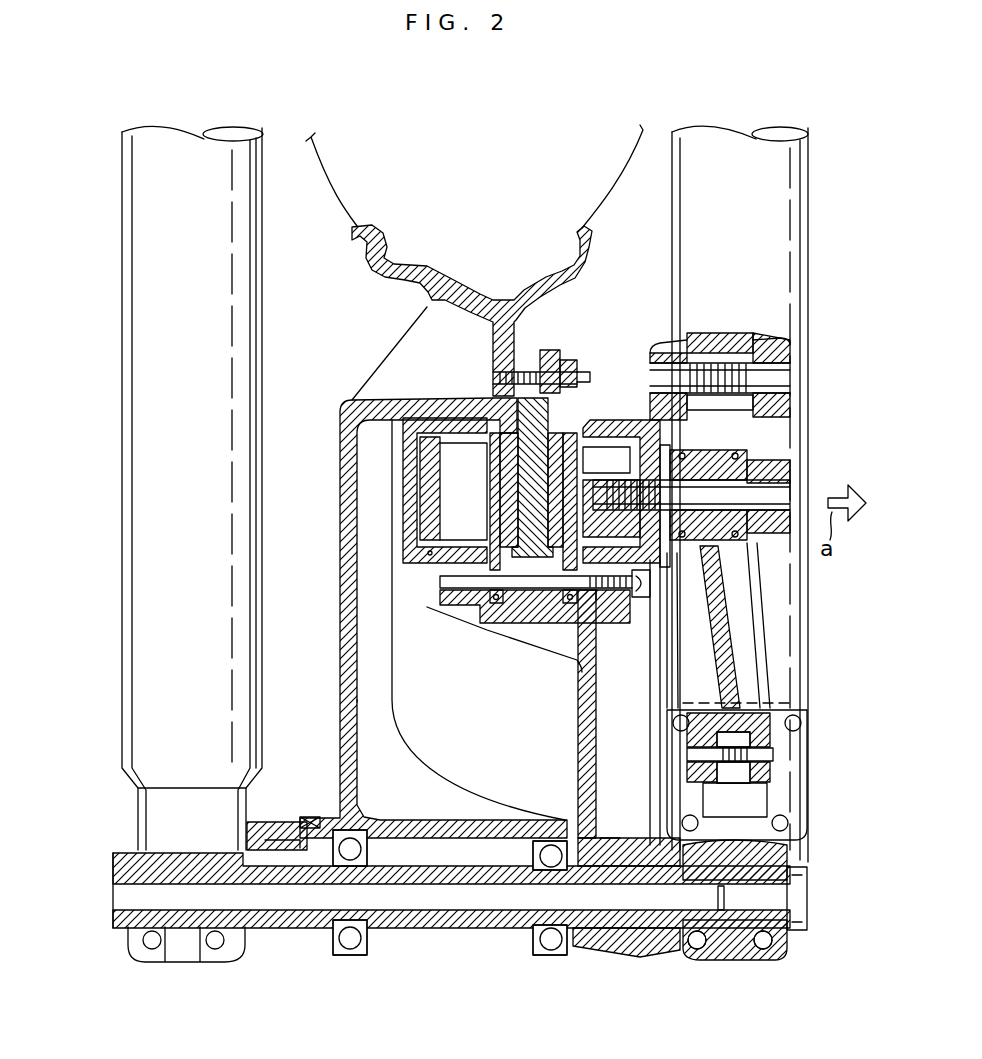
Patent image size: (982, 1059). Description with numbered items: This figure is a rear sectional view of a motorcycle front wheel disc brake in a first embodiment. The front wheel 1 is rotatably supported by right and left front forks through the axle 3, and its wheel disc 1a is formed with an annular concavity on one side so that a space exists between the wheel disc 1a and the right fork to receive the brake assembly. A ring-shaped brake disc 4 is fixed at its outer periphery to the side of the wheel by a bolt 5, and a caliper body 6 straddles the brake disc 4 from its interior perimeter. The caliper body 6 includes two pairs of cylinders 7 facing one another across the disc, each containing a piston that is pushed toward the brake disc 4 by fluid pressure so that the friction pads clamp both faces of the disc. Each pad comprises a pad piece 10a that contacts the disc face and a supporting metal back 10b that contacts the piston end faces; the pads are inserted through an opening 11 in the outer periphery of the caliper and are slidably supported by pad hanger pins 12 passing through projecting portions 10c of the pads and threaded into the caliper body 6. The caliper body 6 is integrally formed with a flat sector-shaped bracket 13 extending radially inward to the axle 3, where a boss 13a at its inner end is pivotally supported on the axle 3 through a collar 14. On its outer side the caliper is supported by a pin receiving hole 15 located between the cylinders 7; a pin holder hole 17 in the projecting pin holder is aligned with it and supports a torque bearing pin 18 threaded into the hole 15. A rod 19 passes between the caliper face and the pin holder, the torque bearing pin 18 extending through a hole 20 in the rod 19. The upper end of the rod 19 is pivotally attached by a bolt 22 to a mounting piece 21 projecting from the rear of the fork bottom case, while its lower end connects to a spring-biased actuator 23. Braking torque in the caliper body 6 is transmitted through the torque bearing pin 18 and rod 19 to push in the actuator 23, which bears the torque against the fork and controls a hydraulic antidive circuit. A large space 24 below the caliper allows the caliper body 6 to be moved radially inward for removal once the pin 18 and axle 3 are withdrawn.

The front wheel 1 is at (400, 358).
The wheel disc 1a is at (343, 433).
The axle 3 is at (452, 905).
The brake disc 4 is at (540, 366).
The bolt 5 is at (552, 352).
The caliper body 6 is at (403, 482).
The cylinder 7 is at (432, 556).
The pad piece 10a is at (505, 558).
The supporting metal back 10b is at (430, 548).
The projecting portion 10c is at (442, 548).
The opening 11 is at (553, 428).
The pad hanger pin 12 is at (545, 582).
The bracket 13 is at (582, 714).
The boss 13a is at (618, 838).
The collar 14 is at (660, 940).
The pin receiving hole 15 is at (640, 598).
The pin holder hole 17 is at (780, 494).
The torque bearing pin 18 is at (742, 536).
The rod 19 is at (730, 624).
The hole 20 is at (780, 462).
The mounting piece 21 is at (718, 336).
The bolt 22 is at (790, 380).
The actuator 23 is at (727, 783).
The space 24 is at (487, 728).